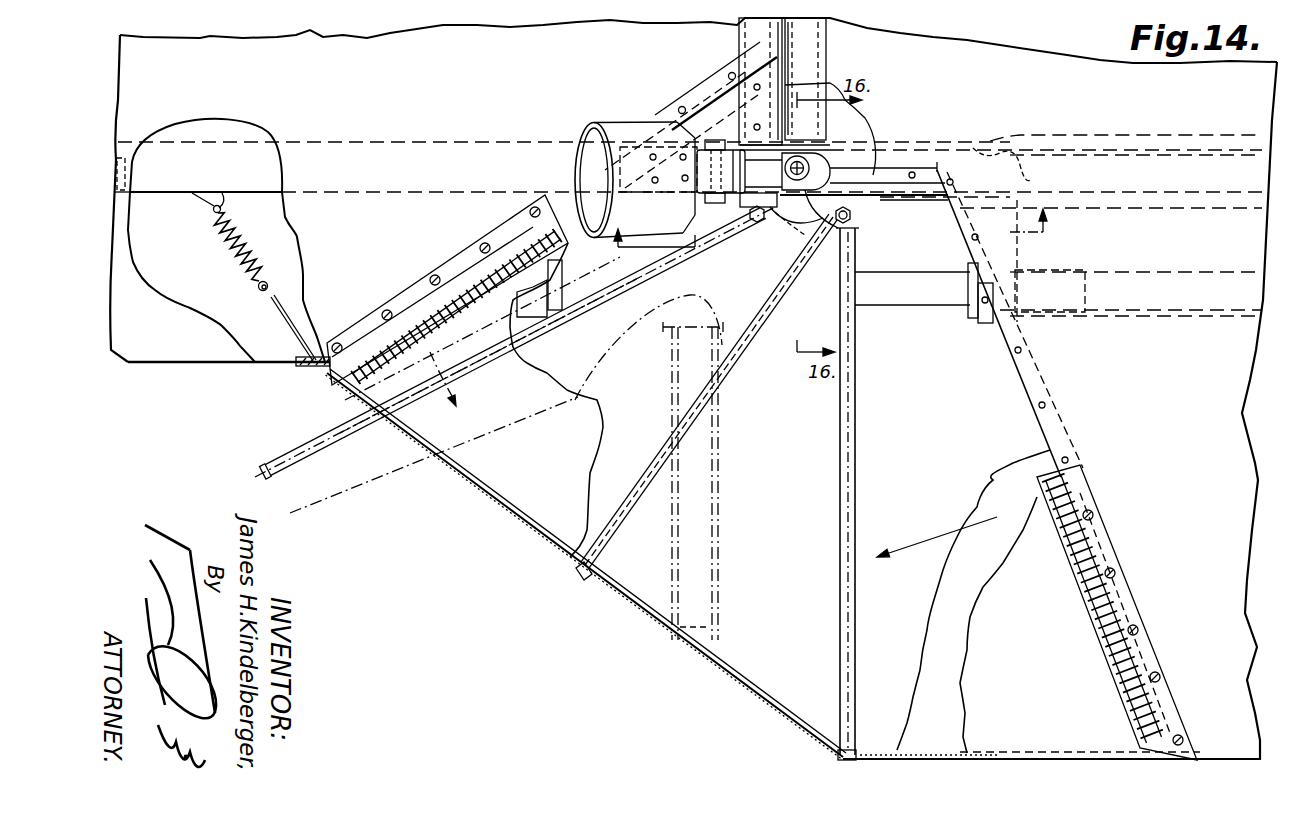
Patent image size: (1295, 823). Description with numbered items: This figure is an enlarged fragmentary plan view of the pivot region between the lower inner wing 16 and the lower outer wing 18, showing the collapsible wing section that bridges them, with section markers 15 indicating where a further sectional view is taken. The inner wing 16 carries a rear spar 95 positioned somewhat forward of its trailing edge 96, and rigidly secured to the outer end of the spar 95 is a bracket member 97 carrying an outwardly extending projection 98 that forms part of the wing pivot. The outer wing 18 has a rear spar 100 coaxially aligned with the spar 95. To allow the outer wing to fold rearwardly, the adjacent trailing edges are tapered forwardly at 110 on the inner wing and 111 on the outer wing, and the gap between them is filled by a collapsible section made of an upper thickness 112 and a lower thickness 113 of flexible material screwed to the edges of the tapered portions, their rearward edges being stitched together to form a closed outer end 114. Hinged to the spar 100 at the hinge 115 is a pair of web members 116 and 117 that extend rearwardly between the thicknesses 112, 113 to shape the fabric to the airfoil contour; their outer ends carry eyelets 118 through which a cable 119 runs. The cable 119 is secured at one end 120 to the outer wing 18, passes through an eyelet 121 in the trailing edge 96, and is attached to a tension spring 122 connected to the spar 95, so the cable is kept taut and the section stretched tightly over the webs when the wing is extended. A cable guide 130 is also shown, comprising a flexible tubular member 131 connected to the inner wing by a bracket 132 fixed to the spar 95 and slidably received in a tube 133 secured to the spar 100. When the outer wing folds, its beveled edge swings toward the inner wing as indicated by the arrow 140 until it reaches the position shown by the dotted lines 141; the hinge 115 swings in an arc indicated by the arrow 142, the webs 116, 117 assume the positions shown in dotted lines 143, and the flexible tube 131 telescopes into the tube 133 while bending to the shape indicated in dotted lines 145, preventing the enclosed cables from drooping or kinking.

The section line 15- 15 is at (834, 234).
The lower inner wing 16 is at (370, 55).
The outer wing 18 is at (1040, 70).
The rear spar 95 is at (224, 152).
The trailing edge 96 is at (220, 365).
The bracket member 97 is at (777, 231).
The projection 98 is at (760, 160).
The rear spar 100 is at (925, 185).
The tapered portion 110 is at (567, 200).
The tapered portion 111 is at (1022, 382).
The upper thickness 112 is at (533, 500).
The lower thickness 113 is at (930, 697).
The closed outer end 114 is at (770, 707).
The hinge 115 is at (850, 217).
The web member 116 is at (727, 373).
The web member 117 is at (838, 447).
The eyelet 118 is at (590, 575).
The cable 119 is at (748, 680).
The cable end 120 is at (1183, 758).
The eyelet 121 is at (320, 368).
The tension spring 122 is at (257, 240).
The cable guide 130 is at (937, 316).
The flexible tubular member 131 is at (890, 303).
The bracket 132 is at (533, 305).
The tube 133 is at (1113, 273).
The arrow 140 is at (925, 548).
The dotted lines 141 is at (488, 435).
The arrow 142 is at (772, 262).
The dotted lines 143 is at (462, 387).
The dotted lines 145 is at (649, 467).